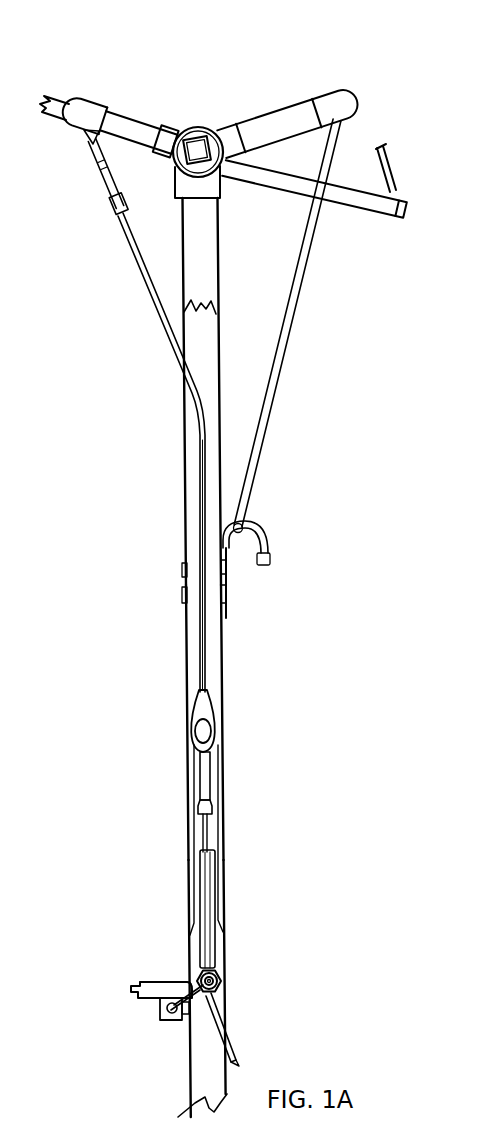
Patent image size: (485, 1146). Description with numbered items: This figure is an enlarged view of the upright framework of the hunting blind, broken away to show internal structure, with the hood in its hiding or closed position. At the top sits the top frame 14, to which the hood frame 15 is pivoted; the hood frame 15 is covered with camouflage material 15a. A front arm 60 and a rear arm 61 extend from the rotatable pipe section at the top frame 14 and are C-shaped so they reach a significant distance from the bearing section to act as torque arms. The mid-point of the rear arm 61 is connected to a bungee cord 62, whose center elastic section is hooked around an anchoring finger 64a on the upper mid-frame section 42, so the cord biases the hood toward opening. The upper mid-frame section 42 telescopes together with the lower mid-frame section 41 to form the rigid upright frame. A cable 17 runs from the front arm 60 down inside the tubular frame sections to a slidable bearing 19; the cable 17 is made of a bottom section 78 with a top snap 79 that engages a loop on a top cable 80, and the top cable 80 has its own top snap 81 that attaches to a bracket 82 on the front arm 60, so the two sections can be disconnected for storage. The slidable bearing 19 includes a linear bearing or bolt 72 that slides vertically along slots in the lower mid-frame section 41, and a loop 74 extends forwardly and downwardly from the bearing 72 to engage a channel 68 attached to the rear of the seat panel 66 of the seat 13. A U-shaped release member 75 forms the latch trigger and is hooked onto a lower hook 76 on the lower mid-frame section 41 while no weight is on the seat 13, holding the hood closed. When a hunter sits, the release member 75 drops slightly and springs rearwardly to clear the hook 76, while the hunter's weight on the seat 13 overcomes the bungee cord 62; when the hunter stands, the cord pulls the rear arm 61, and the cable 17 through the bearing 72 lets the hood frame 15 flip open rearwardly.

The seat 13 is at (153, 977).
The top frame 14 is at (227, 180).
The hood frame 15 is at (322, 78).
The camouflage material 15a is at (393, 170).
The cable 17 is at (190, 637).
The slidable bearing 19 is at (220, 967).
The lower mid-frame section 41 is at (227, 847).
The upper mid-frame section 42 is at (180, 260).
The front arm 60 is at (127, 117).
The rear arm 61 is at (281, 108).
The bungee cord 62 is at (286, 352).
The anchoring finger 64a is at (262, 520).
The seat panel 66 is at (135, 980).
The channel 68 is at (157, 1013).
The linear bearing 72 is at (180, 382).
The loop 74 is at (190, 1020).
The release member 75 is at (232, 1037).
The lower hook 76 is at (237, 1060).
The bottom section 78 is at (205, 827).
The top snap 79 is at (207, 777).
The top cable 80 is at (198, 500).
The top snap 81 is at (102, 187).
The bracket 82 is at (83, 140).